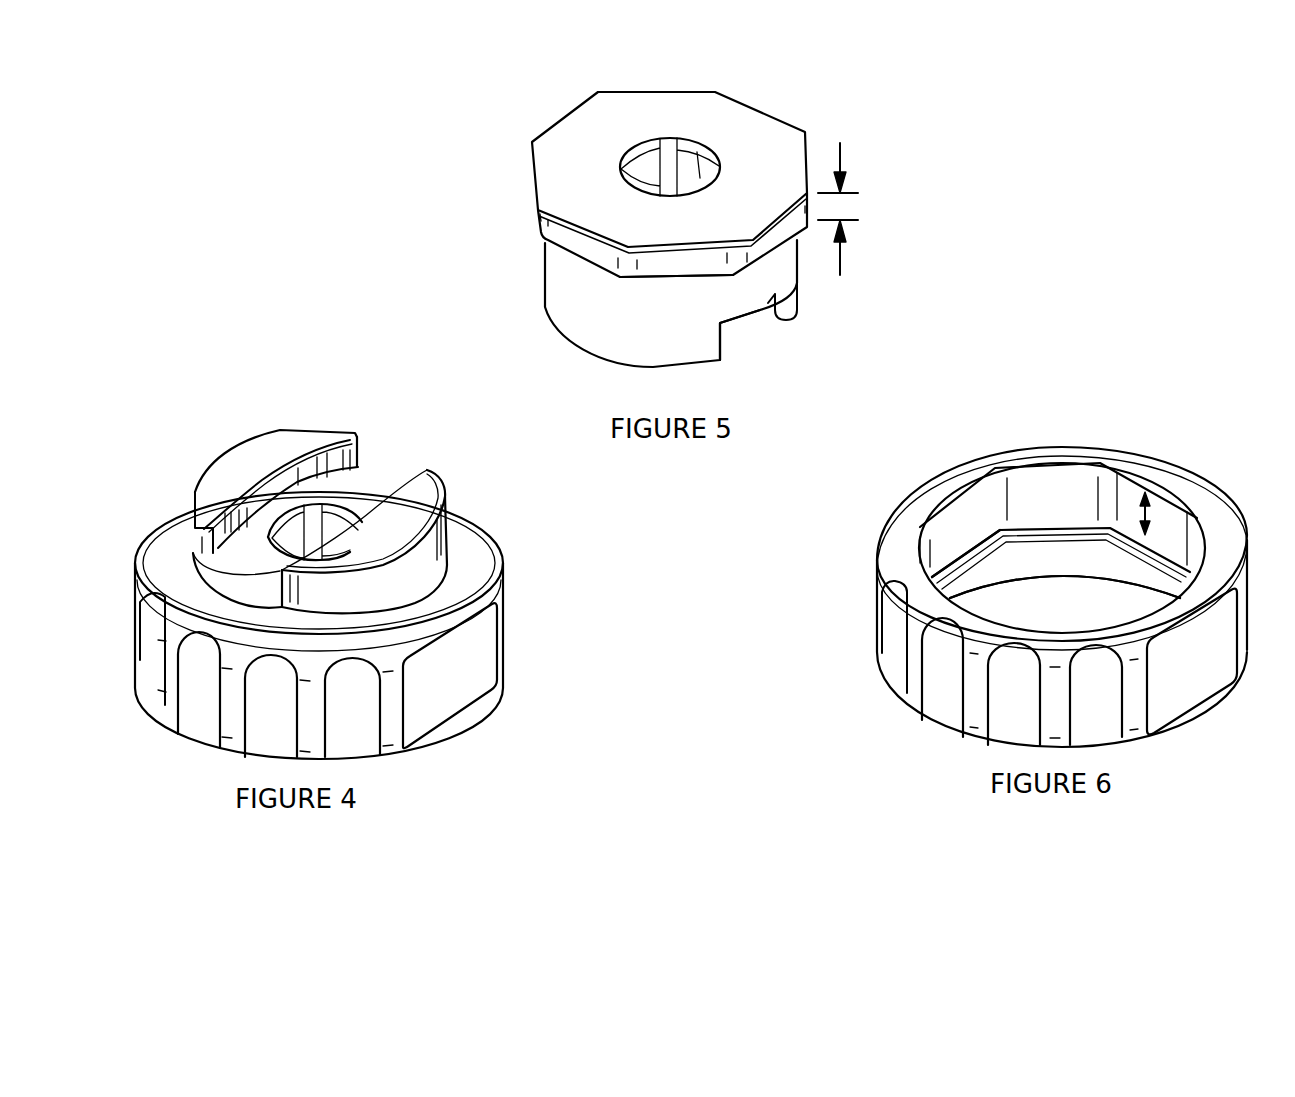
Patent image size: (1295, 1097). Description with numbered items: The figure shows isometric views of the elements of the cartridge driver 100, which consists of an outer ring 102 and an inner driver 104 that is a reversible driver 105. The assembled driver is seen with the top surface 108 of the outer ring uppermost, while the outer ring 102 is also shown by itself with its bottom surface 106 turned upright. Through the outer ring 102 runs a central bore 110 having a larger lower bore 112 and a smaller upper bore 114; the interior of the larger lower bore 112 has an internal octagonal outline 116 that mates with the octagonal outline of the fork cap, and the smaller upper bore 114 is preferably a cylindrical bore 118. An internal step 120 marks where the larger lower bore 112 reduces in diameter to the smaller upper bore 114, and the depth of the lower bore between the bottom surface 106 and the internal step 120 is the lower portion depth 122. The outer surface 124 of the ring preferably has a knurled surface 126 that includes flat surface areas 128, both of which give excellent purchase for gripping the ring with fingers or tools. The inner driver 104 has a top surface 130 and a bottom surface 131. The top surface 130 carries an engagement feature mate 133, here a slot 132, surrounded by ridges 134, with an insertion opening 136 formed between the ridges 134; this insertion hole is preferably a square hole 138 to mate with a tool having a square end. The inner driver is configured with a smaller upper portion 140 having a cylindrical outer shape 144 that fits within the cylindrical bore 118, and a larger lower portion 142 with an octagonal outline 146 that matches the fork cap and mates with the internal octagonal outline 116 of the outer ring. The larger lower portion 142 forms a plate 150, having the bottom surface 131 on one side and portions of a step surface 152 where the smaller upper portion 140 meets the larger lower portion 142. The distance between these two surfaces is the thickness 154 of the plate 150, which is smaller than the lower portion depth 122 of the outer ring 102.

In FIG. 4, the cartridge driver 100 is at (213, 352).
In FIG. 4, the outer ring 102 is at (198, 697).
In FIG. 6, the outer ring 102 is at (923, 663).
In FIG. 5, the inner driver 104 is at (648, 223).
In FIG. 4, the inner driver 104 is at (316, 594).
In FIG. 5, the reversible driver 105 is at (518, 240).
In FIG. 4, the reversible driver 105 is at (352, 577).
In FIG. 4, the bottom surface 106 is at (472, 712).
In FIG. 6, the bottom surface 106 is at (1112, 452).
In FIG. 4, the top surface 108 is at (163, 543).
In FIG. 6, the top surface 108 is at (1150, 735).
In FIG. 6, the central bore 110 is at (1025, 510).
In FIG. 6, the larger lower bore 112 is at (1043, 588).
In FIG. 6, the smaller upper bore 114 is at (978, 575).
In FIG. 6, the internal octagonal outline 116 is at (958, 527).
In FIG. 6, the cylindrical bore 118 is at (958, 547).
In FIG. 6, the internal step 120 is at (1065, 601).
In FIG. 6, the lower portion depth 122 is at (1147, 512).
In FIG. 6, the outer surface 124 is at (888, 597).
In FIG. 6, the knurled surface 126 is at (890, 647).
In FIG. 6, the flat surface areas 128 is at (1192, 662).
In FIG. 4, the top surface 130 is at (215, 477).
In FIG. 5, the bottom surface 131 is at (668, 107).
In FIG. 5, the slot 132 is at (793, 355).
In FIG. 4, the slot 132 is at (385, 416).
In FIG. 5, the engagement feature mate 133 is at (770, 330).
In FIG. 4, the engagement feature mate 133 is at (369, 462).
In FIG. 5, the ridges 134 is at (798, 307).
In FIG. 4, the ridges 134 is at (230, 462).
In FIG. 5, the insertion opening 136 is at (757, 134).
In FIG. 4, the insertion opening 136 is at (406, 505).
In FIG. 5, the square hole 138 is at (691, 166).
In FIG. 4, the square hole 138 is at (333, 522).
In FIG. 5, the smaller upper portion 140 is at (615, 307).
In FIG. 5, the cylindrical outer shape 144 is at (572, 292).
In FIG. 5, the larger lower portion 142 is at (596, 155).
In FIG. 5, the plate 150 is at (588, 138).
In FIG. 5, the octagonal outline 146 is at (540, 206).
In FIG. 5, the step surface 152 is at (688, 281).
In FIG. 5, the thickness 154 is at (842, 164).